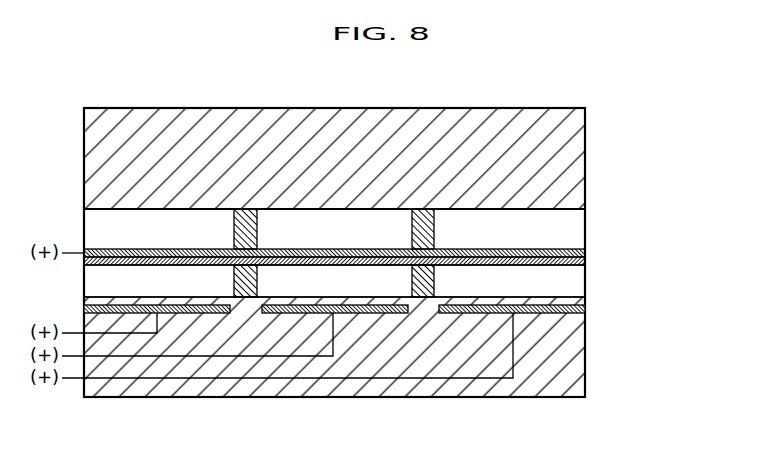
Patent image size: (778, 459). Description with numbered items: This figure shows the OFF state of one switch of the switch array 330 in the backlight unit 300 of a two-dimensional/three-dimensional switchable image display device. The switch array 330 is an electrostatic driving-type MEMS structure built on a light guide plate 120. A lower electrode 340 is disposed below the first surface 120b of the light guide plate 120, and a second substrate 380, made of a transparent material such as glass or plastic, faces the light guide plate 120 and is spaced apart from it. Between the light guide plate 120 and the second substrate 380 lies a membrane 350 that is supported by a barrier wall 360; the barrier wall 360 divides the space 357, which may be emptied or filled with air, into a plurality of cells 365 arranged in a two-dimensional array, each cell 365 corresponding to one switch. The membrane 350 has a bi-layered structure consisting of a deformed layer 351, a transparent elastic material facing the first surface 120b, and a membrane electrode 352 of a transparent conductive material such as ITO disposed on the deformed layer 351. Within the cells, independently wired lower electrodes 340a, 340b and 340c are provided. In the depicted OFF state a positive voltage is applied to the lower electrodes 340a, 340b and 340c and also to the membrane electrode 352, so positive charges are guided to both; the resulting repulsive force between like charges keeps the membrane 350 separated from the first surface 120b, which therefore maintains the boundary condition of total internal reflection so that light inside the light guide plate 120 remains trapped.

The backlight unit 300 is at (662, 91).
The switch array 330 is at (384, 252).
The second substrate 380 is at (578, 160).
The cell 365 is at (257, 230).
The membrane 350 is at (389, 258).
The membrane electrode 352 is at (588, 252).
The deformed layer 351 is at (588, 262).
The space 357 is at (86, 283).
The barrier wall 360 is at (243, 297).
The lower electrode 340 is at (386, 369).
The lower electrode 340a is at (183, 313).
The lower electrode 340b is at (358, 313).
The lower electrode 340c is at (547, 313).
The light guide plate 120 is at (580, 350).
The first surface of the light guide plate 120b is at (507, 297).